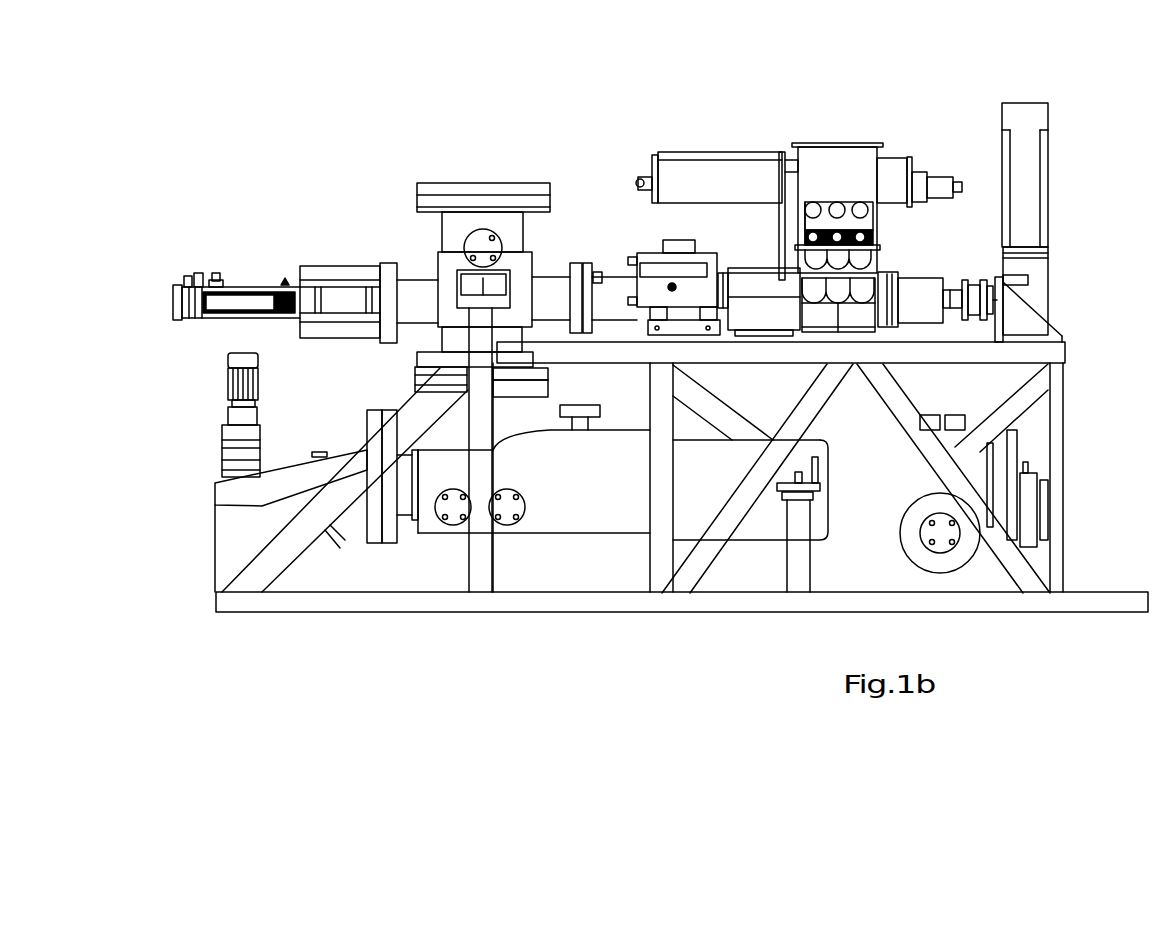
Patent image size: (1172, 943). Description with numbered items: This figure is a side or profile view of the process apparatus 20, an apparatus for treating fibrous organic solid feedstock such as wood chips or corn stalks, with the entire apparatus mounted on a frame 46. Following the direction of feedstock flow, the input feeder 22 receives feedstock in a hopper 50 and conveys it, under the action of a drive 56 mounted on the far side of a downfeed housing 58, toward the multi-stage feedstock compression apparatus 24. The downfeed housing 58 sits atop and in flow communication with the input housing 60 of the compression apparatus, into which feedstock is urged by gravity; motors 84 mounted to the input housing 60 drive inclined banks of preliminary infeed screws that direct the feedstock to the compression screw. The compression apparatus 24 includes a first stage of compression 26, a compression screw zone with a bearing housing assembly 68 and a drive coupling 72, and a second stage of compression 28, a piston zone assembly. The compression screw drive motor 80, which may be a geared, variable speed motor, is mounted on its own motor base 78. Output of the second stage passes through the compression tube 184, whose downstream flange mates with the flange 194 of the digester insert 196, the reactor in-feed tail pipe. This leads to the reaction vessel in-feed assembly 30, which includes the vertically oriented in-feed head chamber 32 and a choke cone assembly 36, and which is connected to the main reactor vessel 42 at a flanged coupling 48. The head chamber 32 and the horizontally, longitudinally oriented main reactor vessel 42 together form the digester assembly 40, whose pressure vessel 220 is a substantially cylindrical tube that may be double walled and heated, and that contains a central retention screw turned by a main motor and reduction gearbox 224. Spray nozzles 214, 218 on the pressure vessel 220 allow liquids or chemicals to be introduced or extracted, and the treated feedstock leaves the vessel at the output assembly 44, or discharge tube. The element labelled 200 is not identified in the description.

The process apparatus 20 is at (298, 140).
The input feeder 22 is at (683, 168).
The multi-stage feedstock compression apparatus 24 is at (748, 288).
The first stage of compression 26 is at (813, 297).
The second stage of compression 28 is at (705, 287).
The reaction vessel in-feed assembly 30 is at (552, 197).
The in-feed head chamber 32 is at (448, 231).
The choke cone assembly 36 is at (330, 268).
The digester assembly 40 is at (545, 493).
The main reactor vessel 42 is at (567, 518).
The output assembly 44 is at (943, 540).
The frame 46 is at (298, 600).
The flanged coupling 48 is at (415, 375).
The hopper 50 is at (648, 175).
The drive 56 is at (942, 176).
The downfeed housing 58 is at (867, 168).
The input housing 60 is at (882, 247).
The bearing housing assembly 68 is at (925, 318).
The drive coupling 72 is at (973, 292).
The motor base 78 is at (1040, 328).
The compression screw drive motor 80 is at (1032, 175).
The motors 84 is at (823, 203).
The compression tube 184 is at (613, 297).
The flange 194 is at (575, 280).
The digester insert 196 is at (542, 287).
The top flange 200 is at (505, 225).
The spray nozzles 214 is at (622, 395).
The spray nozzles 218 is at (452, 522).
The pressure vessel 220 is at (423, 520).
The main motor and reduction gearbox 224 is at (228, 372).